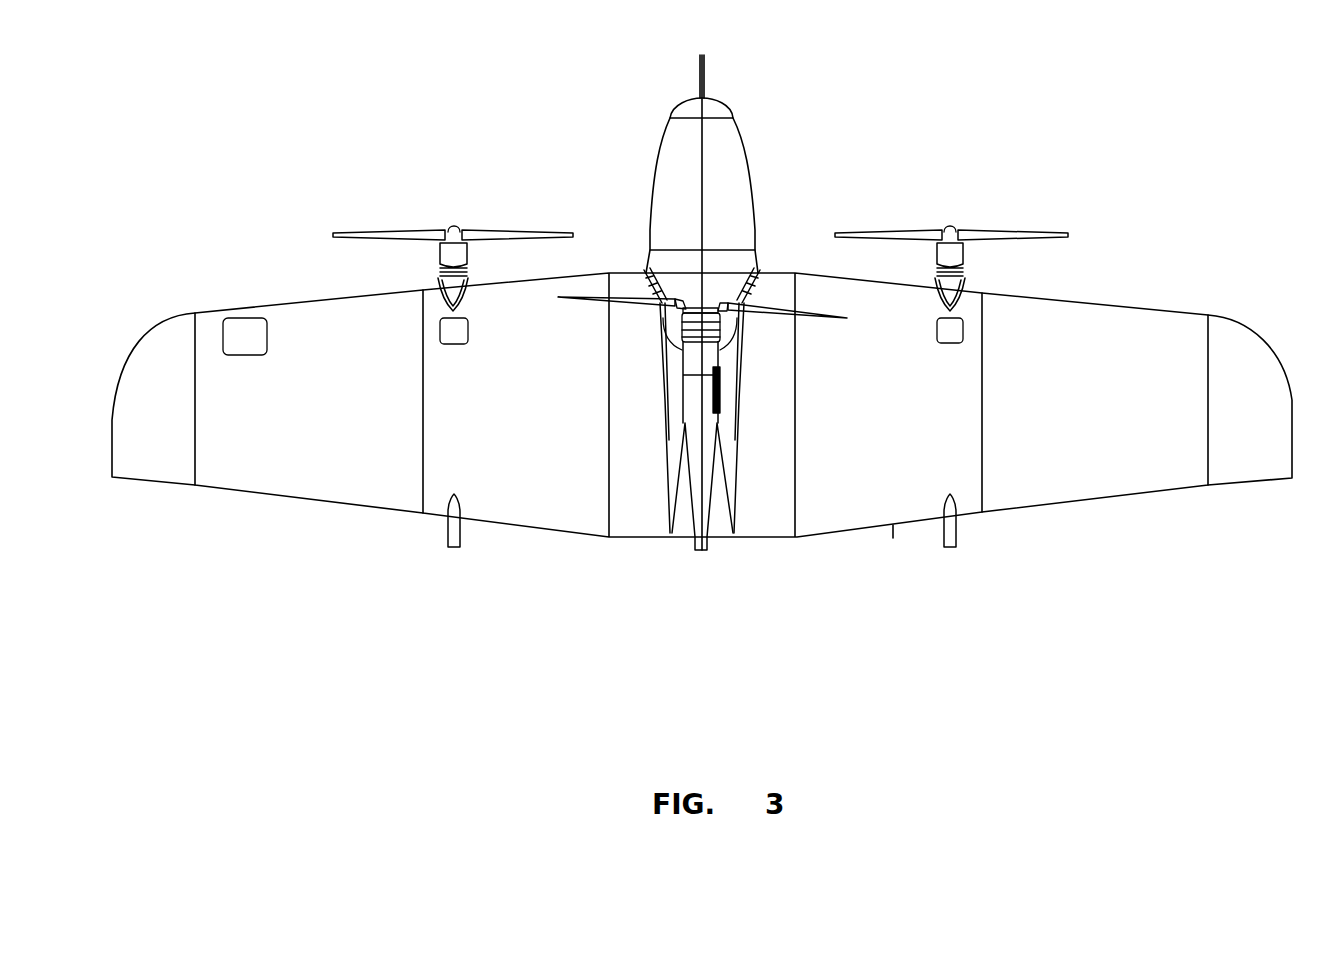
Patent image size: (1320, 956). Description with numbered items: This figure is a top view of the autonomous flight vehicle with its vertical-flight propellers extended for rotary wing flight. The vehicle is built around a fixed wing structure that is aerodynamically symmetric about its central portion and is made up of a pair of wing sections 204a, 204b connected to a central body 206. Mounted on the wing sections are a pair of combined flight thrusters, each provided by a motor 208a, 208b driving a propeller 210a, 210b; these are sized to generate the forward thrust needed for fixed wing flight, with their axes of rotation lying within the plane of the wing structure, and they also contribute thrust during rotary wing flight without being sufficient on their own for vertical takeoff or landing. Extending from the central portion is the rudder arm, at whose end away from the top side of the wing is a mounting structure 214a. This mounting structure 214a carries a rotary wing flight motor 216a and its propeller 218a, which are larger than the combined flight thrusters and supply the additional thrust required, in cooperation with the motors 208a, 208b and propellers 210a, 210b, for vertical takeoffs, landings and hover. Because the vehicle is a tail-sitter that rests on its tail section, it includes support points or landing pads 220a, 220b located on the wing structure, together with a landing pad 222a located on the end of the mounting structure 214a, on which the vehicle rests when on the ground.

The wing section 204a is at (1182, 315).
The wing section 204b is at (260, 308).
The central body 206 is at (670, 132).
The combined flight motor 208a is at (953, 250).
The combined flight motor 208b is at (455, 250).
The propeller 210a is at (923, 232).
The propeller 210b is at (428, 231).
The mounting structure 214a is at (688, 385).
The rotary wing flight motor 216a is at (697, 317).
The rotary wing flight propeller 218a is at (642, 297).
The landing pad 220a is at (950, 549).
The landing pad 220b is at (453, 549).
The landing pad 222a is at (707, 551).